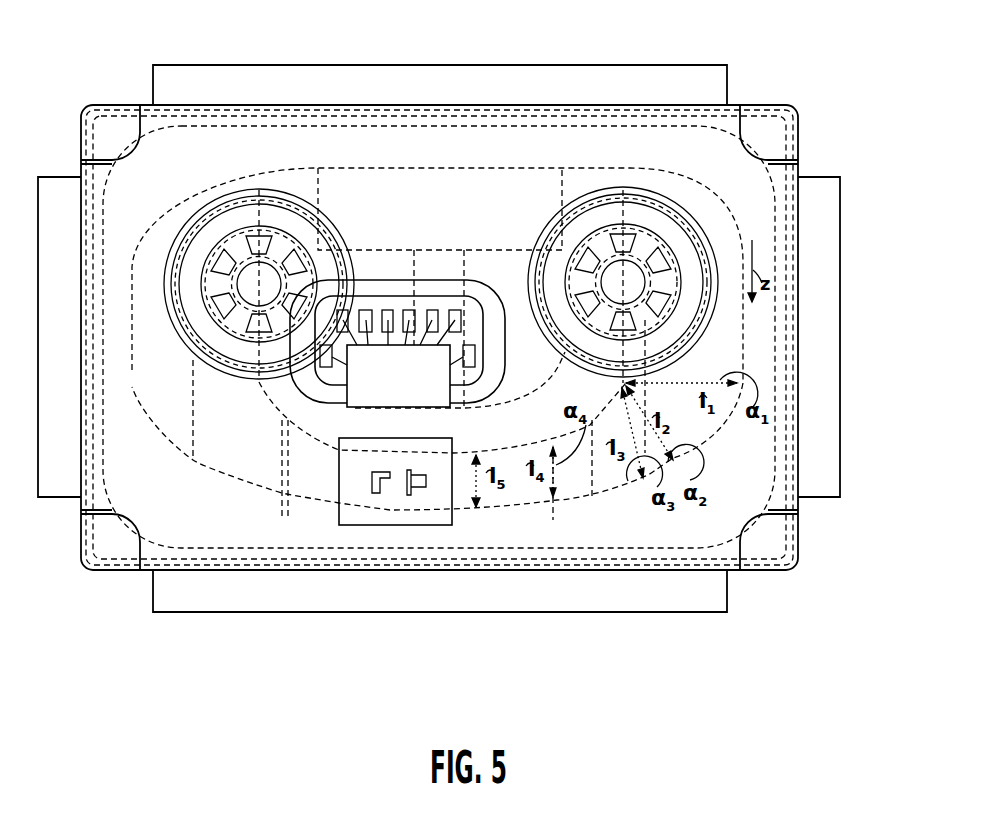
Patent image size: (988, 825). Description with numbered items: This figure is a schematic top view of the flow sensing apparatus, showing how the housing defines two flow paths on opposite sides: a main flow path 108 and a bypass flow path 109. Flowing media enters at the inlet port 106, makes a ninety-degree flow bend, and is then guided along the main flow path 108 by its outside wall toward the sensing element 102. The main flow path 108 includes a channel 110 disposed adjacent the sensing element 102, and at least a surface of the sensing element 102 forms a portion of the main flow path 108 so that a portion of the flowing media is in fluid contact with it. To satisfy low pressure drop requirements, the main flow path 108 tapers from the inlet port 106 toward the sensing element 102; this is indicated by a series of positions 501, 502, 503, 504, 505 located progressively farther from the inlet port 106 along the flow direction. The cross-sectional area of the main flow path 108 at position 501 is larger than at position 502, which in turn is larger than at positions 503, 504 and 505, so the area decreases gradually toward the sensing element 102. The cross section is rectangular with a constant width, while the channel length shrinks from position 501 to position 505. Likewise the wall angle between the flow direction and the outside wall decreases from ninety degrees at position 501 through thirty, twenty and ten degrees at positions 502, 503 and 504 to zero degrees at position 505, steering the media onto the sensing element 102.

The bypass flow path 109 is at (418, 193).
The inlet port 106 is at (630, 270).
The position 501 is at (692, 381).
The position 502 is at (668, 467).
The position 503 is at (618, 465).
The position 504 is at (547, 483).
The position 505 is at (472, 483).
The main flow path 108 is at (598, 483).
The sensing element 102 is at (380, 480).
The channel 110 is at (365, 467).